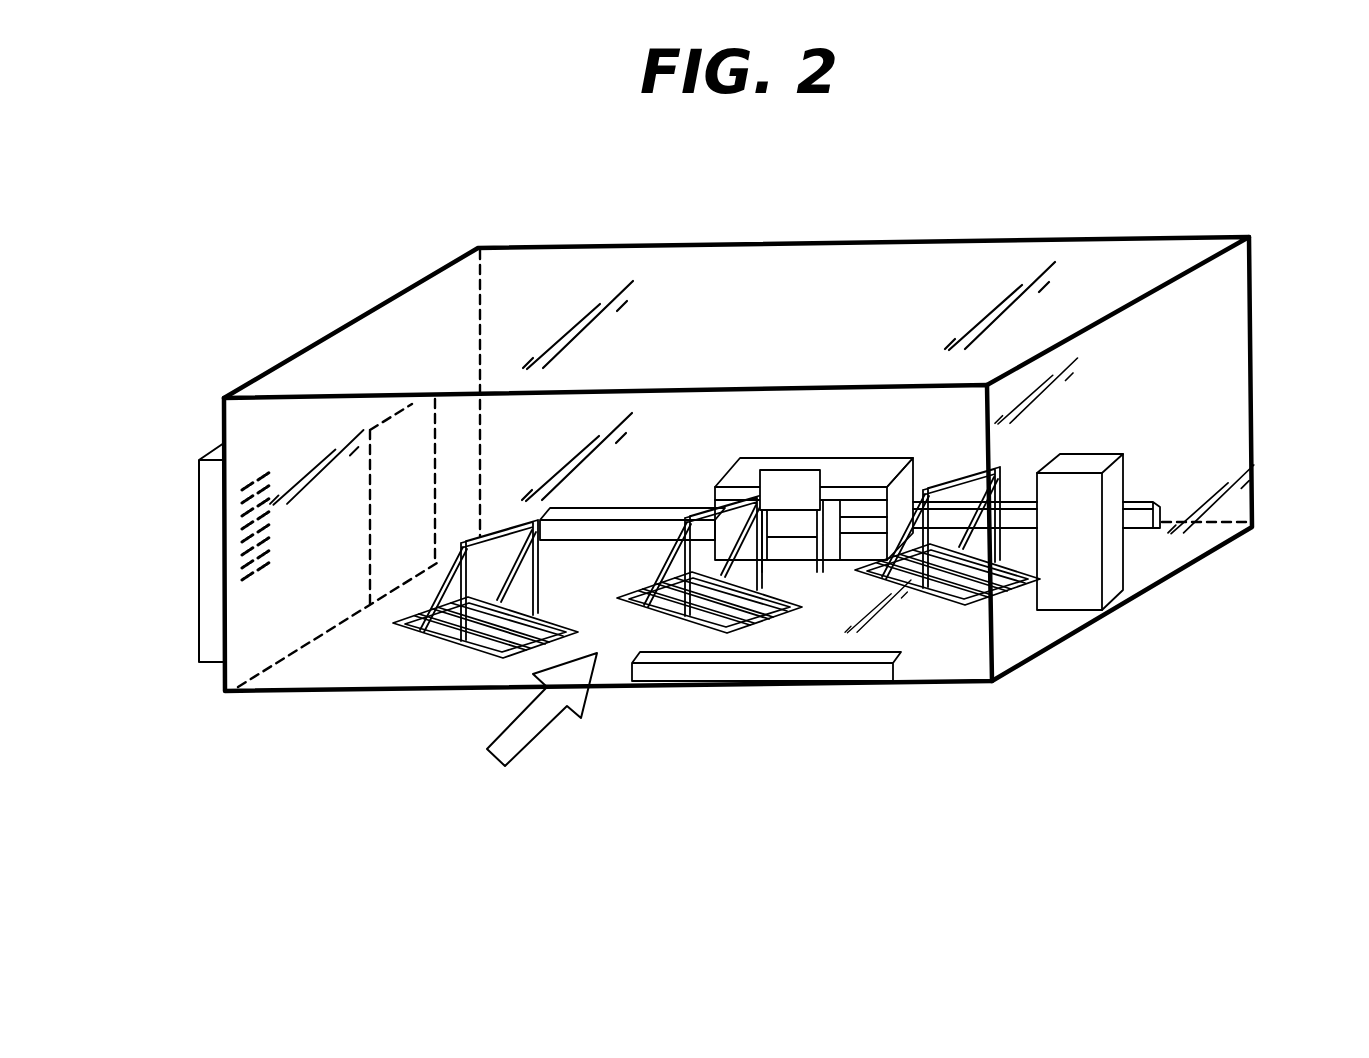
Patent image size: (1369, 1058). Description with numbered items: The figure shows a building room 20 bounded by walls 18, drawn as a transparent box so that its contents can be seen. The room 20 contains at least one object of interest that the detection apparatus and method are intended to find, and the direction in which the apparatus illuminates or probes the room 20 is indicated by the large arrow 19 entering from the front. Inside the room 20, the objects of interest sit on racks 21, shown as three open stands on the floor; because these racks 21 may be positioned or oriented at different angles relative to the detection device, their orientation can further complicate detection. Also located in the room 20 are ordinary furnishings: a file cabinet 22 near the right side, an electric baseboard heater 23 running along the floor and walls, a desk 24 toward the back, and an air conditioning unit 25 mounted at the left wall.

The walls 18 is at (672, 450).
The arrow 19 is at (545, 723).
The room 20 is at (302, 285).
The racks 21 is at (455, 645).
The file cabinet 22 is at (1085, 570).
The electric baseboard heater 23 is at (787, 675).
The desk 24 is at (817, 457).
The air conditioning unit 25 is at (197, 479).